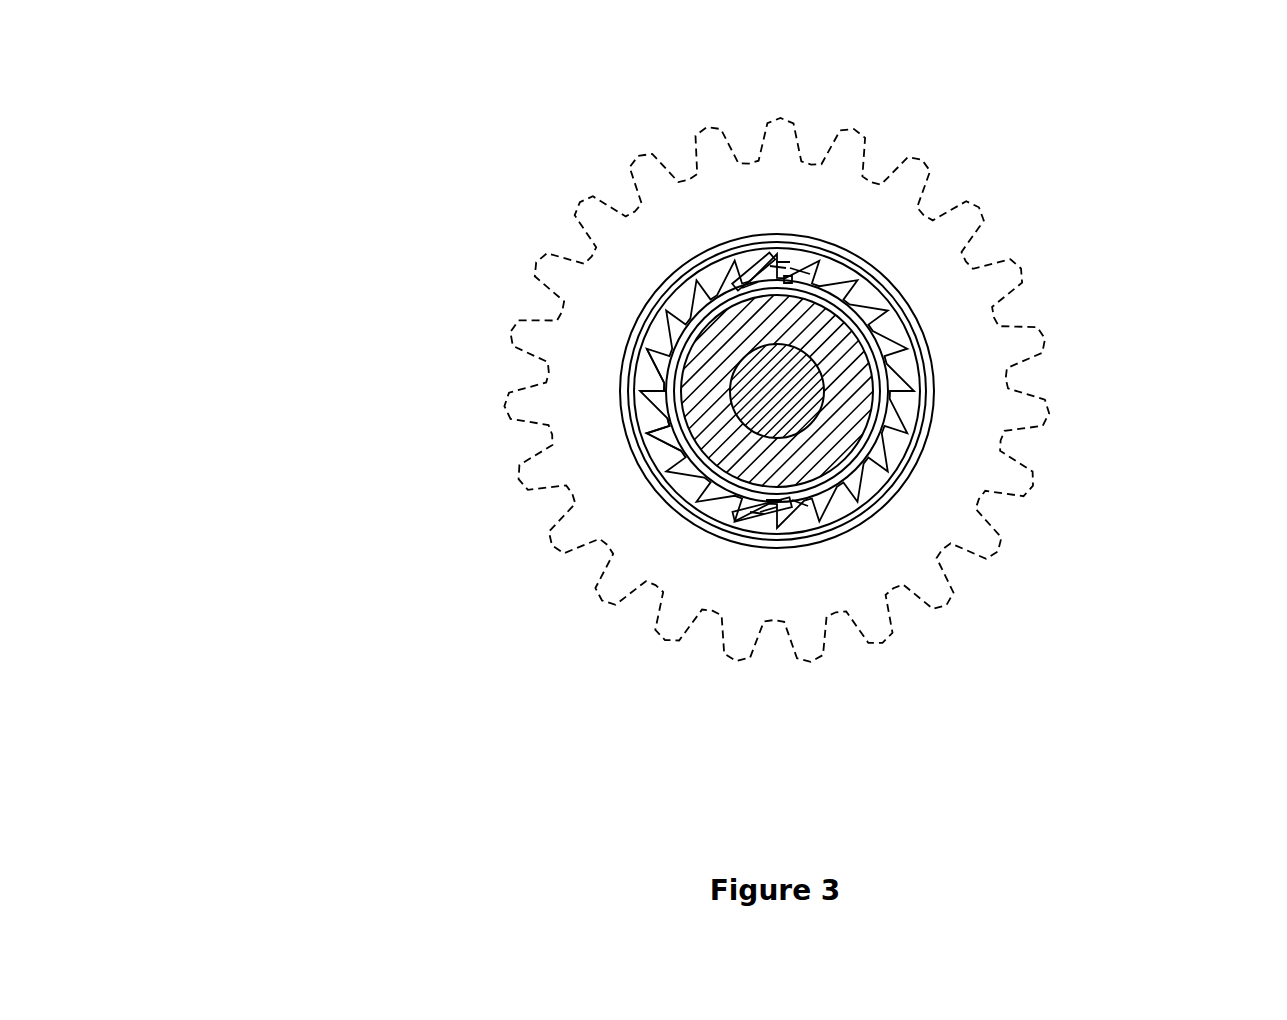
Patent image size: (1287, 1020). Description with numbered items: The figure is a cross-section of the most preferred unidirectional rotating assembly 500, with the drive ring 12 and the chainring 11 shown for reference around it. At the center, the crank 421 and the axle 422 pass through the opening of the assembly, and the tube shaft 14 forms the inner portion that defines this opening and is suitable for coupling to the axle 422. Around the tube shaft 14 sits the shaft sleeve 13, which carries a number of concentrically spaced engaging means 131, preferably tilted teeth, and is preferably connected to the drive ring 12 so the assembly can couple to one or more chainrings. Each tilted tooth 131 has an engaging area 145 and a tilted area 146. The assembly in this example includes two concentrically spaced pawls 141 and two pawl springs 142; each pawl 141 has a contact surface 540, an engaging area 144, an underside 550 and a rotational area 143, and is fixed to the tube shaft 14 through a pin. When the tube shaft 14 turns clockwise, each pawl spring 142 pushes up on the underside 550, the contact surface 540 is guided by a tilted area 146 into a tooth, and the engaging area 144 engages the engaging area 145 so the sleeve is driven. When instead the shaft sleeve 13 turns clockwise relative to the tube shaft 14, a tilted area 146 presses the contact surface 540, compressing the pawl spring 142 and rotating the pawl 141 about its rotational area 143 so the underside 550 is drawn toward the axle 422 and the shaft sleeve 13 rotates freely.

The unidirectional rotating assembly 500 is at (603, 175).
The chainring 11 is at (1050, 409).
The drive ring 12 is at (882, 462).
The shaft sleeve 13 is at (872, 488).
The engaging means 131 is at (935, 462).
The tube shaft 14 is at (873, 342).
The pawl 141 is at (797, 270).
The pawl spring 142 is at (787, 280).
The rotational area 143 is at (740, 290).
The engaging area 144 is at (778, 265).
The engaging area 145 is at (652, 392).
The tilted area 146 is at (662, 445).
The crank 421 is at (817, 428).
The axle 422 is at (757, 373).
The contact surface 540 is at (755, 272).
The underside 550 is at (782, 262).